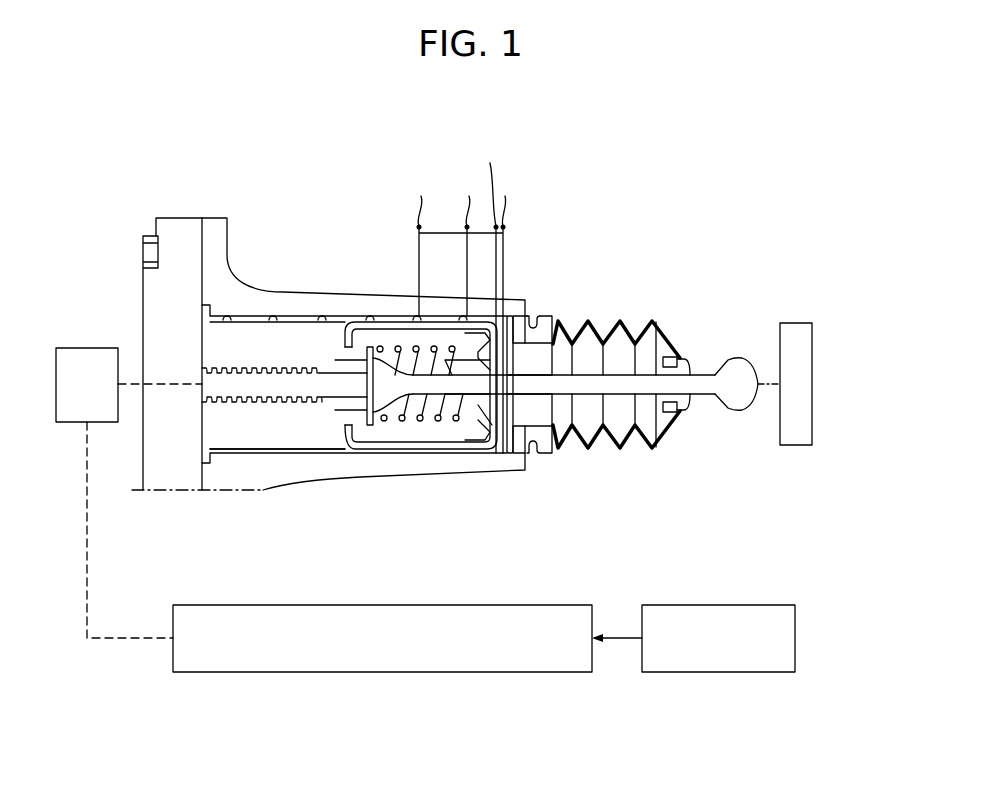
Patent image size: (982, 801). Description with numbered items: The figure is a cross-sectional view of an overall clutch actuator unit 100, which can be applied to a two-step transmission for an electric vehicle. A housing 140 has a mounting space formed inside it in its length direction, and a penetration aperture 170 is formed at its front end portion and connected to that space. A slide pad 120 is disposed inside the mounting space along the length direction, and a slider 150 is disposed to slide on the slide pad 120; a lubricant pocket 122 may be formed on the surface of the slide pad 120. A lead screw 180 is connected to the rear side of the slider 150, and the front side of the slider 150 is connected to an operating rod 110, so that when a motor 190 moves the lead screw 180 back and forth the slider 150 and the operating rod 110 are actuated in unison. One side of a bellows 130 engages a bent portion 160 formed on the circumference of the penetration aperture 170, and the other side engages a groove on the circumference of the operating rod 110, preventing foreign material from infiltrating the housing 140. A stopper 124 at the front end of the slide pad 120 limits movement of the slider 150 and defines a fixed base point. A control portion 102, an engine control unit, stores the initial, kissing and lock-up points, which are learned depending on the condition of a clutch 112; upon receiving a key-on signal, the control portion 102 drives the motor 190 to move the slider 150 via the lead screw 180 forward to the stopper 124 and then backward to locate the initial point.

The clutch actuator unit 100 is at (373, 152).
The control portion 102 is at (382, 673).
The operating rod 110 is at (728, 391).
The clutch 112 is at (797, 322).
The slide pad 120 is at (293, 318).
The lubricant pocket 122 is at (263, 337).
The stopper 124 is at (507, 418).
The bellows 130 is at (608, 440).
The housing 140 is at (283, 467).
The slider 150 is at (378, 445).
The bent portion 160 is at (542, 337).
The penetration aperture 170 is at (531, 360).
The lead screw 180 is at (235, 388).
The motor 190 is at (87, 347).